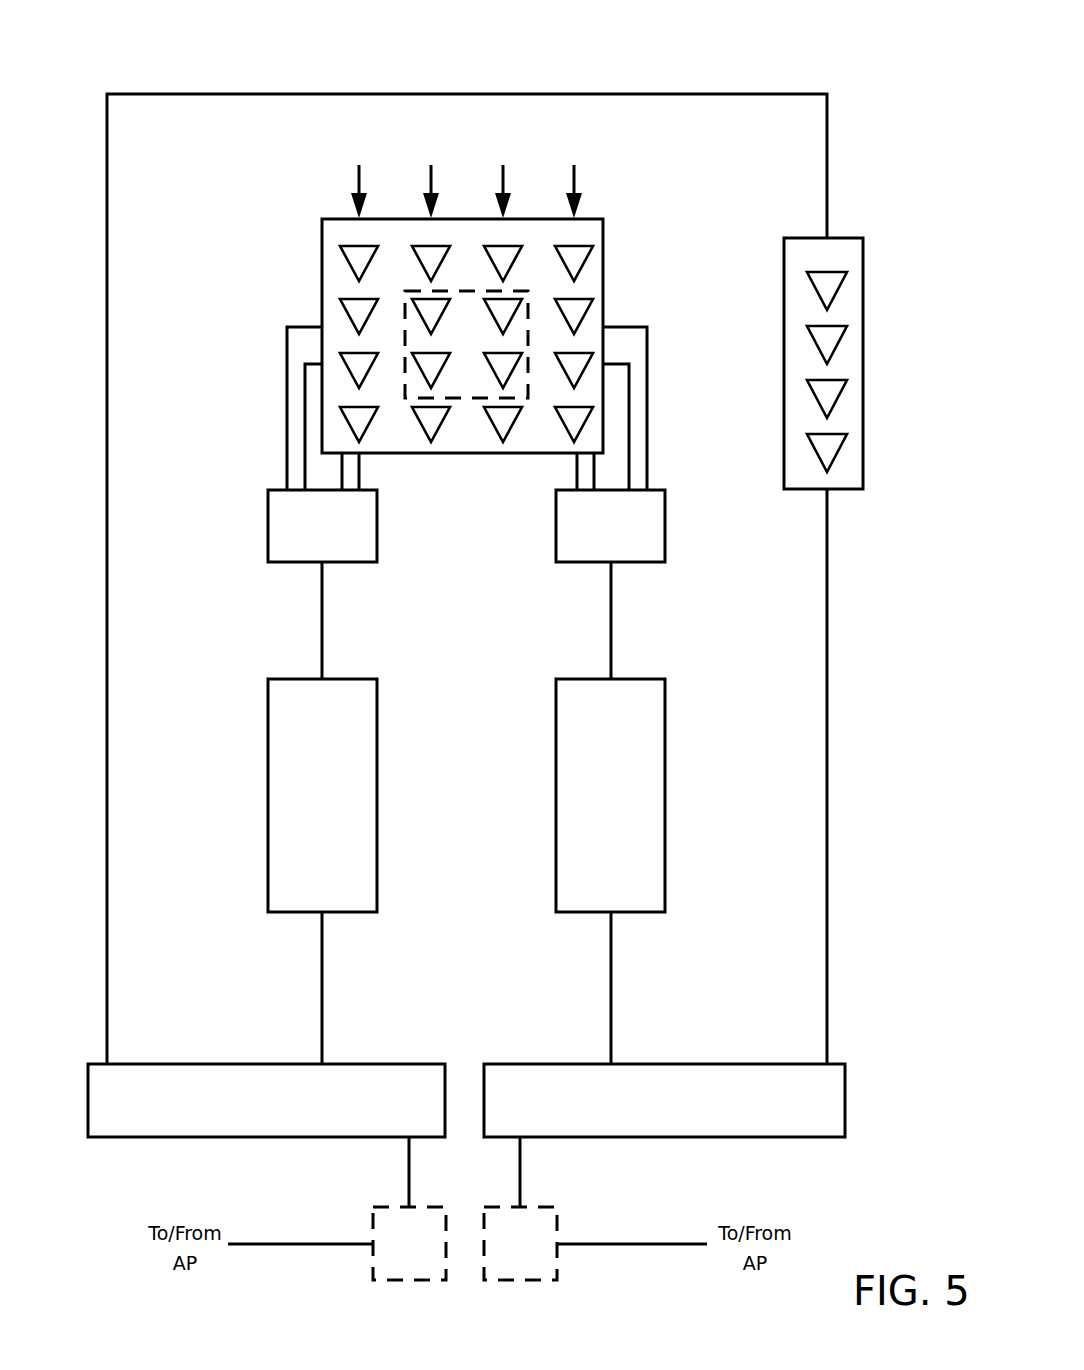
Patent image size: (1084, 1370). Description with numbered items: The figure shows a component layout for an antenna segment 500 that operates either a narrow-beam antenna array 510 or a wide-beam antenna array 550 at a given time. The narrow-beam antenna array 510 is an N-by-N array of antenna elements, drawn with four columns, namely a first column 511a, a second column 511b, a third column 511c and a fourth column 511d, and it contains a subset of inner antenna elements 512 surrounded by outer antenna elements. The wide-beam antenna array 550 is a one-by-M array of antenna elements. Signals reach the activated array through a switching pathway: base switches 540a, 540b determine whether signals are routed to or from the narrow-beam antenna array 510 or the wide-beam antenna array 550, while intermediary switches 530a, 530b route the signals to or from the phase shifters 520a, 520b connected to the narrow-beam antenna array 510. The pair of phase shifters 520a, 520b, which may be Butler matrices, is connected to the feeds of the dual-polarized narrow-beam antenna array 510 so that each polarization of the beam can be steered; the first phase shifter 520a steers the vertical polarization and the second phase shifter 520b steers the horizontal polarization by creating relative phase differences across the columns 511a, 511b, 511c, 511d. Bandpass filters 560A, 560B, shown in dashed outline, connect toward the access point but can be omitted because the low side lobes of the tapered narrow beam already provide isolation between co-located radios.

The antenna segment 500 is at (102, 67).
The narrow-beam antenna array 510 is at (603, 287).
The first column 511a is at (359, 178).
The second column 511b is at (431, 178).
The third column 511c is at (502, 178).
The fourth column 511d is at (574, 178).
The inner antenna elements 512 is at (403, 302).
The first phase shifter 520a is at (297, 539).
The second phase shifter 520b is at (586, 539).
The intermediary switch 530a is at (297, 808).
The intermediary switch 530b is at (586, 808).
The base switch 540a is at (242, 1113).
The base switch 540b is at (640, 1113).
The wide-beam antenna array 550 is at (845, 237).
The bandpass filter 560A is at (383, 1256).
The bandpass filter 560B is at (494, 1256).